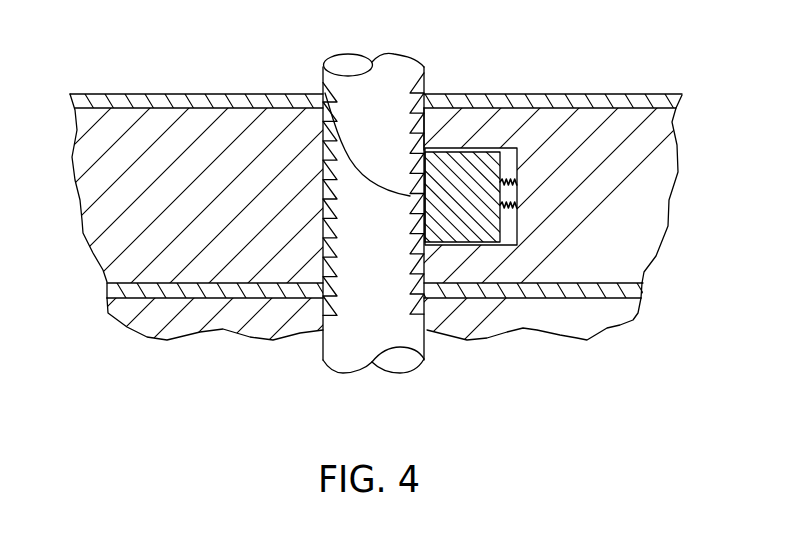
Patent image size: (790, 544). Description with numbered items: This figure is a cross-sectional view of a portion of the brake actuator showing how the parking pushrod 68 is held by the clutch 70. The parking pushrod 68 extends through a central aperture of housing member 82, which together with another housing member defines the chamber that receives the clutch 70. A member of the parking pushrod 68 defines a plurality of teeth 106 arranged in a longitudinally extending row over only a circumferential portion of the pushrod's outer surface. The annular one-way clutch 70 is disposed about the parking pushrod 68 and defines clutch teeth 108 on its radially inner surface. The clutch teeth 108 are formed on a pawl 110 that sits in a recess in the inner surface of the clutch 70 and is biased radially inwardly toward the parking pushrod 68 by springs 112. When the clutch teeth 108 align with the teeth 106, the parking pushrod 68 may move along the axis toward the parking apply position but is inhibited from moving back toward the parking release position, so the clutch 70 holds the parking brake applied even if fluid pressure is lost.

The parking pushrod 68 is at (340, 347).
The clutch 70 is at (163, 190).
The housing member 82 is at (160, 312).
The teeth 106 is at (427, 130).
The clutch teeth 108 is at (325, 93).
The pawl 110 is at (465, 215).
The springs 112 is at (510, 213).